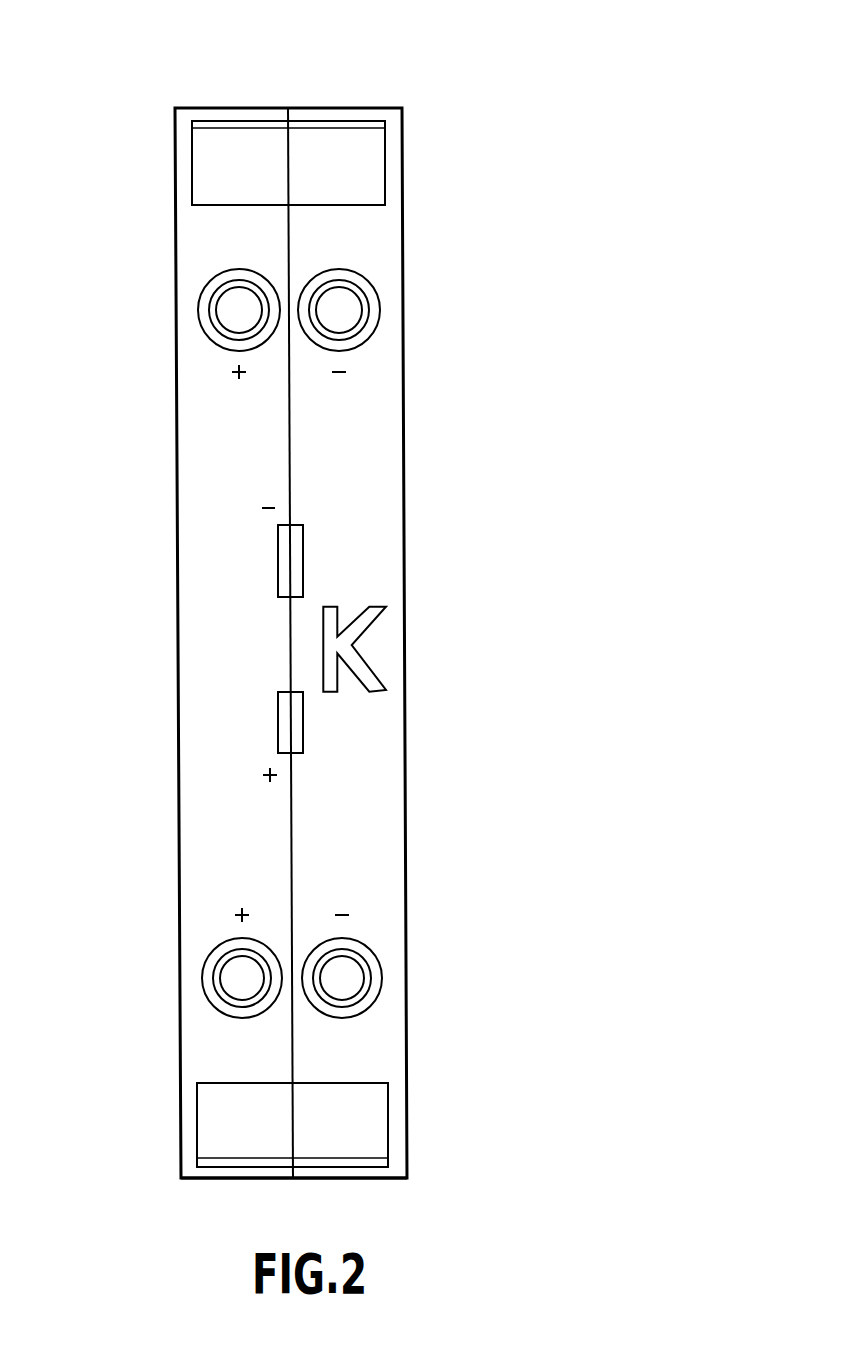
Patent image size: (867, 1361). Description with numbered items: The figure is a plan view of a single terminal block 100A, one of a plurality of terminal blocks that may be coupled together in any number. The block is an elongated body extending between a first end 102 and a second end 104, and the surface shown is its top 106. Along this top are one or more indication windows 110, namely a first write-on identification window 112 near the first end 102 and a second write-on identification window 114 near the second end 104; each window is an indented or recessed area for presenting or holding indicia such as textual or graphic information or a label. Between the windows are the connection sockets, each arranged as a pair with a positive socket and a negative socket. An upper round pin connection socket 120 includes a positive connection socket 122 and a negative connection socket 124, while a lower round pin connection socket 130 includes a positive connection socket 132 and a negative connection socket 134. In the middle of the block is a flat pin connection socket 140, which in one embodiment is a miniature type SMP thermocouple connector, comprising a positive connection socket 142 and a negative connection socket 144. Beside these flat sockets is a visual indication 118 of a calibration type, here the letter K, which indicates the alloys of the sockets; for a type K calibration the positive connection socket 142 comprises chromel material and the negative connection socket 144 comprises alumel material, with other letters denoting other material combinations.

The first terminal block 100A is at (348, 85).
The first end 102 is at (232, 98).
The second end 104 is at (293, 1178).
The top 106 is at (203, 1037).
The indication windows 110 is at (153, 152).
The first write-on identification window 112 is at (375, 145).
The second write-on identification window 114 is at (217, 1103).
The visual indication of a calibration type 118 is at (362, 630).
The round pin connection socket 120 is at (165, 250).
The positive connection socket 122 is at (203, 320).
The negative connection socket 124 is at (373, 308).
The round pin connection socket 130 is at (165, 927).
The positive connection socket 132 is at (210, 973).
The negative connection socket 134 is at (375, 980).
The flat pin connection socket 140 is at (387, 577).
The positive connection socket 142 is at (303, 733).
The negative connection socket 144 is at (303, 535).